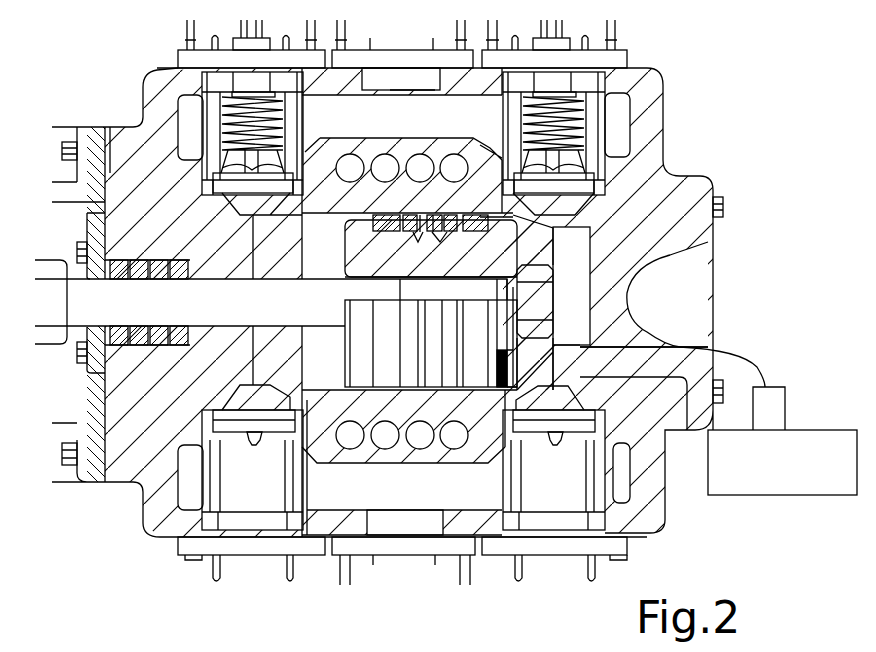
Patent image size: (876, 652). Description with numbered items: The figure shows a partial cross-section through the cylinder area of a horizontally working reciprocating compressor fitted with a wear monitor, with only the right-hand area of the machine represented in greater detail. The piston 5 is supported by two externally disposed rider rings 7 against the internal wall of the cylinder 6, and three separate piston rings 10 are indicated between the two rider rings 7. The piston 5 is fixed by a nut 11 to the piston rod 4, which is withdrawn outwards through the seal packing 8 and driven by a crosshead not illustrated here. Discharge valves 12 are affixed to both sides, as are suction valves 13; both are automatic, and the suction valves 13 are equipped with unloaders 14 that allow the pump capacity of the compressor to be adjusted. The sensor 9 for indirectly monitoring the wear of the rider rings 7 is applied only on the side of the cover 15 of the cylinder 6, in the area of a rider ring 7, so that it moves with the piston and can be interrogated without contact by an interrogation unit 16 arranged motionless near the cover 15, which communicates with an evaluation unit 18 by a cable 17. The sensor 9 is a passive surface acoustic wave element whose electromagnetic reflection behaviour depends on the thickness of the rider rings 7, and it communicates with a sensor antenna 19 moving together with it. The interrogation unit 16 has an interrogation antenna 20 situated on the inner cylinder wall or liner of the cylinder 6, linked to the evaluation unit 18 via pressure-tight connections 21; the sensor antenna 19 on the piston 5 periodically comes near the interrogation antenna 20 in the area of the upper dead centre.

The piston rod 4 is at (298, 313).
The piston 5 is at (350, 247).
The cylinder 6 is at (305, 380).
The rider rings 7 is at (385, 238).
The seal packing 8 is at (154, 356).
The sensor 9 is at (496, 363).
The piston rings 10 is at (436, 240).
The nut 11 is at (546, 305).
The discharge valves 12 is at (290, 492).
The suction valves 13 is at (302, 133).
The unloaders 14 is at (222, 160).
The cover 15 is at (628, 265).
The interrogation unit 16 is at (640, 348).
The cable 17 is at (728, 353).
The evaluation unit 18 is at (847, 491).
The sensor antenna 19 is at (518, 360).
The interrogation antenna 20 is at (553, 362).
The pressure-tight connections 21 is at (667, 345).